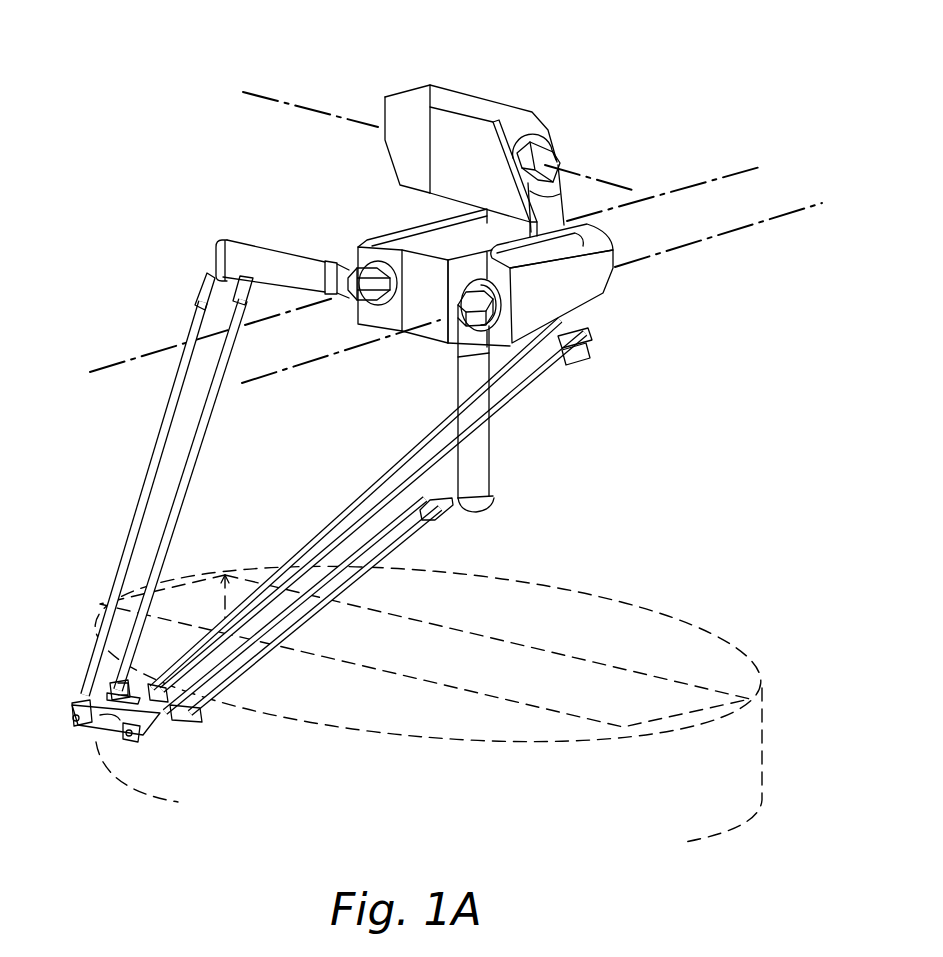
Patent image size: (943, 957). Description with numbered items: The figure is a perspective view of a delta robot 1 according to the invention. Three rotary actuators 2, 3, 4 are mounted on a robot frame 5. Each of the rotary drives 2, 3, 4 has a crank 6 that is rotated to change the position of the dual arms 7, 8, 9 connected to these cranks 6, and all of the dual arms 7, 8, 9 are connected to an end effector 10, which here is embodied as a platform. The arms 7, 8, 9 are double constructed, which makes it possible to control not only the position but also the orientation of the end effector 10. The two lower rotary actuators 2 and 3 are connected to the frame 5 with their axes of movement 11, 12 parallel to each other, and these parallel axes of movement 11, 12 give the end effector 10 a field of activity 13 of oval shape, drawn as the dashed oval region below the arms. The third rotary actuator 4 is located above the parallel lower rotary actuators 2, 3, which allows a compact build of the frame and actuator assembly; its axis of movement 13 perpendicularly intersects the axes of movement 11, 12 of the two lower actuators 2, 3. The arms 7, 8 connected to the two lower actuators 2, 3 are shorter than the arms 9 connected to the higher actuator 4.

The delta robot 1 is at (675, 63).
The rotary actuator 2 is at (377, 247).
The rotary actuator 3 is at (577, 283).
The third rotary actuator 4 is at (482, 107).
The robot frame 5 is at (428, 333).
The crank 6 is at (273, 257).
The dual arm 7 is at (148, 483).
The dual arm 8 is at (370, 572).
The dual arm 9 is at (381, 481).
The end effector 10 is at (102, 732).
The axis of movement 11 is at (128, 360).
The axis of movement 12 is at (277, 370).
The axis of movement / field of activity 13 is at (277, 101).